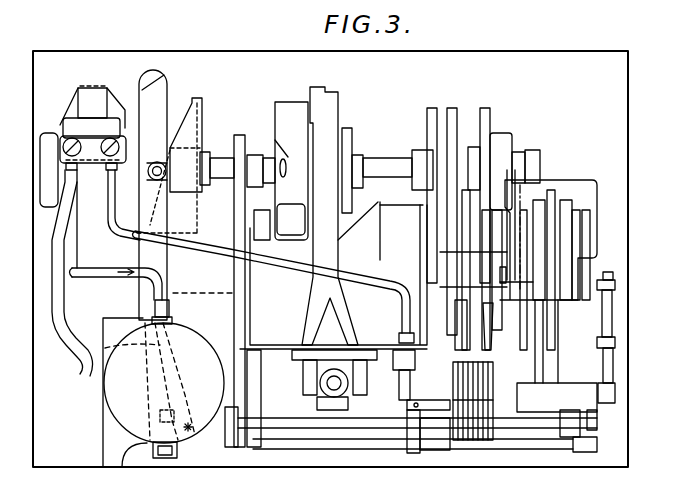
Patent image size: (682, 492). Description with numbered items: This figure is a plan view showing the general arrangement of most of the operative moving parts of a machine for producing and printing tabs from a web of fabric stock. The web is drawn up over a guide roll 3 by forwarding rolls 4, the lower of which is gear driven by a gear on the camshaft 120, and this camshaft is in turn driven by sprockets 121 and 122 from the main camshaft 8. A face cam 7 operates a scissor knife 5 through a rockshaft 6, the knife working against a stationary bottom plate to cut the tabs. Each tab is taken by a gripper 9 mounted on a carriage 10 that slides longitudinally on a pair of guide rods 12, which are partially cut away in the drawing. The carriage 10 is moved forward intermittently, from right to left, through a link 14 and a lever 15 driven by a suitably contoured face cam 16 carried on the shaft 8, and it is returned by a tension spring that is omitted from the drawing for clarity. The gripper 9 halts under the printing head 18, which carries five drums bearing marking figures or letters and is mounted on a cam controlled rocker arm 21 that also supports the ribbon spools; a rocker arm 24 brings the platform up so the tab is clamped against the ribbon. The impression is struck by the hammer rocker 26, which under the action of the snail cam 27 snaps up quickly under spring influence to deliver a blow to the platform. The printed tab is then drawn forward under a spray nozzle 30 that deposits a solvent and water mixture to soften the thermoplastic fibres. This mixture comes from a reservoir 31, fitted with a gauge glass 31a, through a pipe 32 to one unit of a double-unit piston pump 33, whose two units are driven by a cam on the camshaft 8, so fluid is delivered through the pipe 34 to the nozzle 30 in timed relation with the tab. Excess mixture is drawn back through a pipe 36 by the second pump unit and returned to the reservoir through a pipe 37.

The guide roll 3 is at (550, 260).
The forwarding rolls 4 is at (550, 378).
The scissor knife 5 is at (598, 404).
The rockshaft 6 is at (608, 272).
The face cam 7 is at (587, 310).
The main camshaft 8 is at (373, 165).
The gripper 9 is at (433, 407).
The carriage 10 is at (413, 417).
The guide rods 12 is at (513, 421).
The link 14 is at (232, 449).
The lever 15 is at (153, 112).
The face cam 16 is at (200, 118).
The printing head 18 is at (473, 438).
The rocker arm 21 is at (458, 360).
The rocker arm 24 is at (470, 360).
The hammer rocker 26 is at (462, 313).
The snail cam 27 is at (455, 108).
The spray nozzle 30 is at (407, 403).
The reservoir 31 is at (130, 405).
The gauge glass 31a is at (166, 459).
The pipe 32 is at (63, 296).
The double-unit piston pump 33 is at (67, 133).
The pipe 34 is at (363, 282).
The pipe 36 is at (110, 249).
The pipe 37 is at (99, 271).
The camshaft 120 is at (455, 380).
The sprocket 121 is at (518, 151).
The sprocket 122 is at (472, 350).